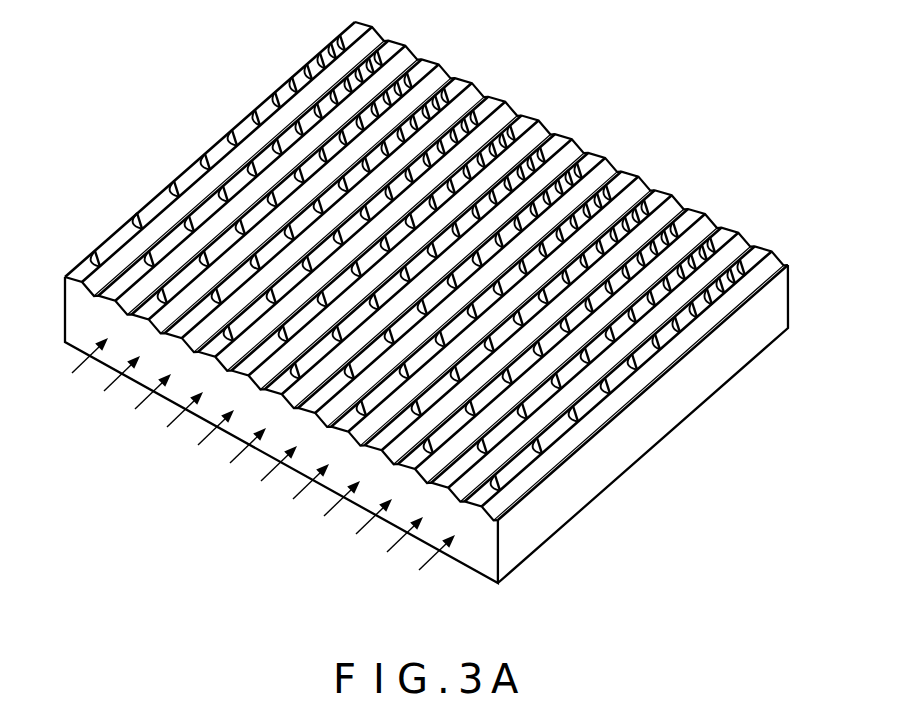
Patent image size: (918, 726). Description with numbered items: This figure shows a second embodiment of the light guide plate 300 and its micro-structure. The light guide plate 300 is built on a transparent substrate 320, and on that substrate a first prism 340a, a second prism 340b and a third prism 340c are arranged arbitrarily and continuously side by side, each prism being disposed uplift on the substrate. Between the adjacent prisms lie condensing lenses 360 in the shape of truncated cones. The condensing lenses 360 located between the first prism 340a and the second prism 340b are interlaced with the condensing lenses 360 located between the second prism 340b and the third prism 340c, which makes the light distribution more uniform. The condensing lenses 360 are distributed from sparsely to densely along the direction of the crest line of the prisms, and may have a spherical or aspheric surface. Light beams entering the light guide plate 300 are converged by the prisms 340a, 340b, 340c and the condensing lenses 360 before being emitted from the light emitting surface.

The light guide plate 300 is at (422, 302).
The transparent substrate 320 is at (714, 369).
The first prism 340a is at (172, 332).
The second prism 340b is at (203, 343).
The third prism 340c is at (302, 272).
The condensing lenses 360 is at (206, 347).